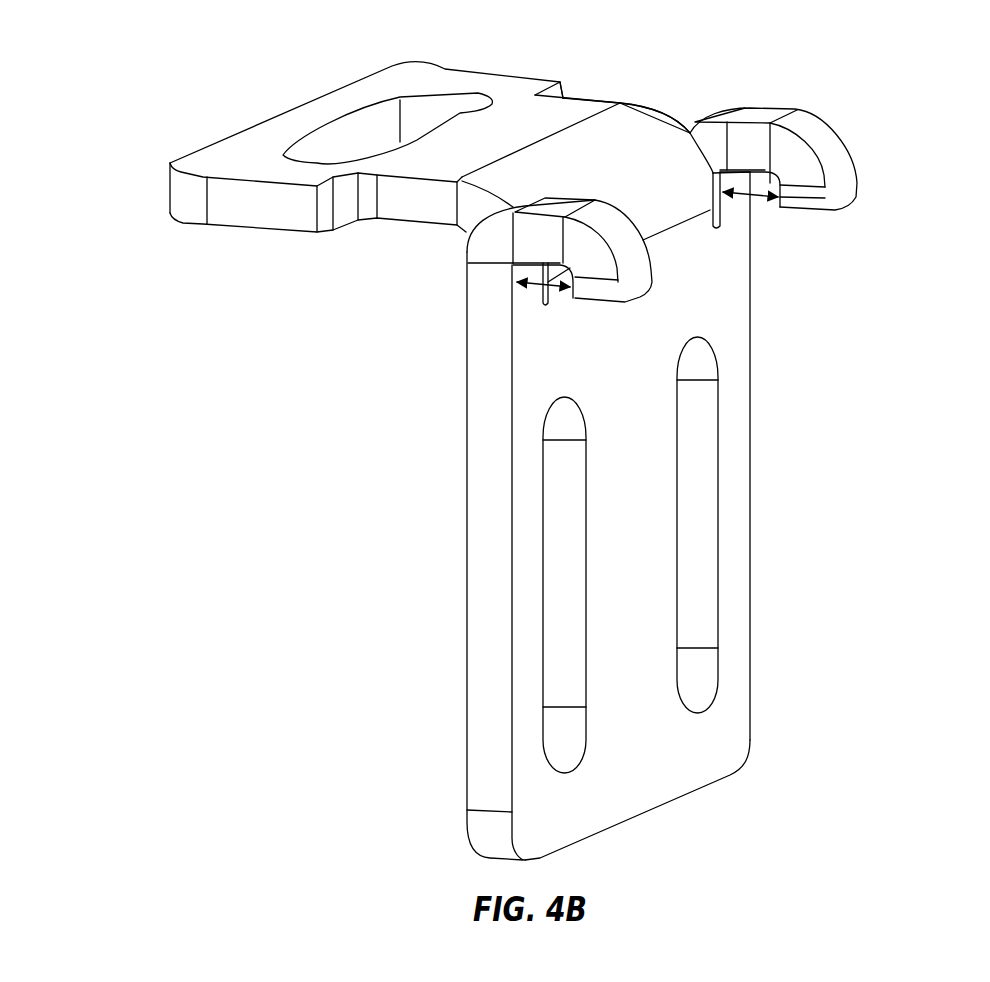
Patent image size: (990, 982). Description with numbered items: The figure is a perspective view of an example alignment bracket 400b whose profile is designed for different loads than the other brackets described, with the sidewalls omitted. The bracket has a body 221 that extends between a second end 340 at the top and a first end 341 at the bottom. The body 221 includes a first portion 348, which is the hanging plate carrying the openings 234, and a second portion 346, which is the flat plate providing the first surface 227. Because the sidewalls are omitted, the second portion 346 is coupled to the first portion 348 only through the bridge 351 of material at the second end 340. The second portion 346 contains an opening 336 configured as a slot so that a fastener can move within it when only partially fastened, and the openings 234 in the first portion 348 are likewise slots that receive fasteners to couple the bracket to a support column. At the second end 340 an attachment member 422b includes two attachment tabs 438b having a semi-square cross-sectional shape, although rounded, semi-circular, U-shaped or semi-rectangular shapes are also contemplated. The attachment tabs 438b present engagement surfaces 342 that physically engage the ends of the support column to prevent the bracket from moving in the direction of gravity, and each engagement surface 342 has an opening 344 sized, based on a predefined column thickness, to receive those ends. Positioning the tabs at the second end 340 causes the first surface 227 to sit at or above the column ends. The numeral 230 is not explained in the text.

The alignment bracket 400b is at (196, 44).
The first surface 227 is at (315, 100).
The opening 336 is at (383, 118).
The engagement surfaces 342 is at (527, 265).
The second portion 346 is at (550, 117).
The attachment tabs 438b is at (593, 210).
The bridge 351 is at (627, 122).
The second end 340 is at (663, 205).
The attachment member 422b is at (862, 108).
The openings 344 is at (535, 295).
The openings 234 is at (553, 488).
The vertical plate 230 is at (735, 558).
The first portion 348 is at (750, 660).
The body 221 is at (657, 775).
The first end 341 is at (602, 835).